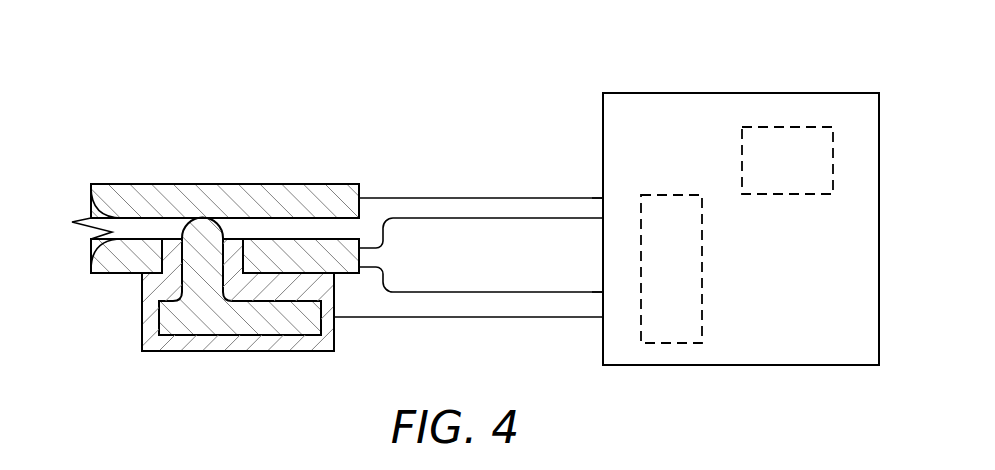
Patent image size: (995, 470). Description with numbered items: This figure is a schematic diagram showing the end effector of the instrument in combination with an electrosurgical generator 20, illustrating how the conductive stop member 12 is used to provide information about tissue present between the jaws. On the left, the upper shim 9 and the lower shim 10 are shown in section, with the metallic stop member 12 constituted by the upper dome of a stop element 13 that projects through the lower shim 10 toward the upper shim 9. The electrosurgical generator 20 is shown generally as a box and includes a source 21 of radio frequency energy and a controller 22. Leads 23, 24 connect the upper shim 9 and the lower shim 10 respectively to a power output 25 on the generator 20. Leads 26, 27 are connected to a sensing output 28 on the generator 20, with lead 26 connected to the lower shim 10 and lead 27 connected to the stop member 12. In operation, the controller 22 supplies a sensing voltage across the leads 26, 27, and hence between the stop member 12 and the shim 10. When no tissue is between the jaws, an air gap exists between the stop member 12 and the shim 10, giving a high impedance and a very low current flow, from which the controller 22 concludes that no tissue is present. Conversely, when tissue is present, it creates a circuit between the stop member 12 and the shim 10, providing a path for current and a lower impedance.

The upper shim 9 is at (323, 190).
The lower shim 10 is at (100, 258).
The stop member 12 is at (202, 222).
The stop element 13 is at (200, 327).
The electrosurgical generator 20 is at (622, 93).
The source of radio frequency energy 21 is at (816, 127).
The controller 22 is at (682, 344).
The lead 23 is at (428, 198).
The lead 24 is at (430, 218).
The power output 25 is at (603, 196).
The lead 26 is at (478, 292).
The lead 27 is at (483, 318).
The sensing output 28 is at (602, 292).